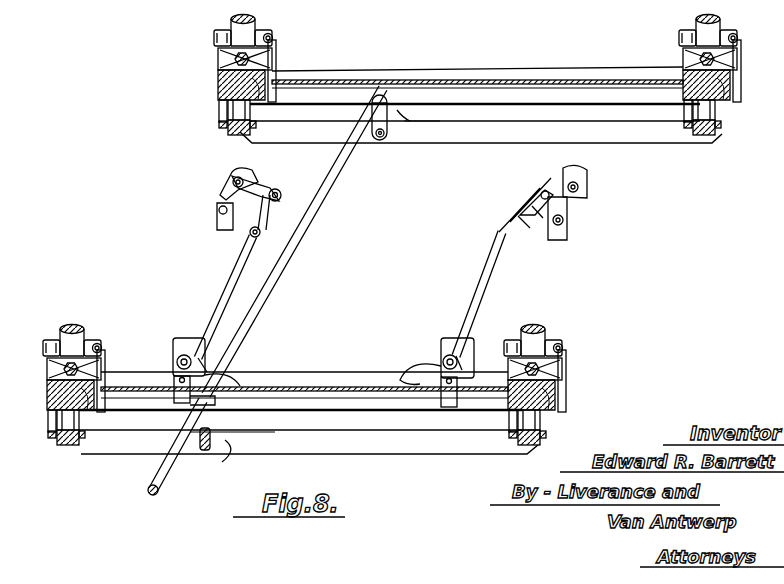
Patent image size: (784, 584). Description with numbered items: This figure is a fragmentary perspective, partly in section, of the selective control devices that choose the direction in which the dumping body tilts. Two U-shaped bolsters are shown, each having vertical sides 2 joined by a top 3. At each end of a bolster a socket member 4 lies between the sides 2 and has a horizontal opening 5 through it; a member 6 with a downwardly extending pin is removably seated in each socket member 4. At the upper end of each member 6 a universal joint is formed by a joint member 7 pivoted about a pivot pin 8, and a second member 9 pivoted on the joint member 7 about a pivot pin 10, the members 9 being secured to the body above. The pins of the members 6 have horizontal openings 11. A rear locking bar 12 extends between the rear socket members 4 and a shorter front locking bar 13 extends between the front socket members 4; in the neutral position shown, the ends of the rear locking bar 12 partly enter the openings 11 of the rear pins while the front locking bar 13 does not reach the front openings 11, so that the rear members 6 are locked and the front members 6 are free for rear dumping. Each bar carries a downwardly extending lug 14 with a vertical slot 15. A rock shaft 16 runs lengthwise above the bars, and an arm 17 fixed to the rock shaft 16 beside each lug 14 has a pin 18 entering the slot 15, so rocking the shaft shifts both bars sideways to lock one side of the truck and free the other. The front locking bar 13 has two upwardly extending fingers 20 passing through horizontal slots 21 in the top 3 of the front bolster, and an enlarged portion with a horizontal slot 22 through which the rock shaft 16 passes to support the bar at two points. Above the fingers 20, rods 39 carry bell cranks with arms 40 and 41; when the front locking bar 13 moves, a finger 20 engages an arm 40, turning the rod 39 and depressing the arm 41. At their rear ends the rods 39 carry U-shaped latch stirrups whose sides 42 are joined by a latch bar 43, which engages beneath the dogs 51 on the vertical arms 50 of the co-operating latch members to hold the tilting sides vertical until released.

The sides 2 is at (470, 135).
The top 3 is at (497, 72).
The socket member 4 is at (278, 84).
The horizontal opening 5 is at (225, 115).
The members 6 is at (225, 90).
The joint member 7 is at (275, 56).
The pivot pin 8 is at (228, 64).
The universal joint member 9 is at (247, 30).
The pivot pin 10 is at (273, 40).
The openings 11 is at (232, 132).
The rear locking bar 12 is at (427, 123).
The front locking bar 13 is at (280, 423).
The lug 14 is at (400, 110).
The vertical slot 15 is at (213, 430).
The rock shaft 16 is at (272, 293).
The arm 17 is at (372, 100).
The pin 18 is at (383, 130).
The fingers 20 is at (180, 387).
The horizontal slots 21 is at (250, 385).
The horizontal slot 22 is at (192, 405).
The rods 39 is at (218, 290).
The arm 40 is at (173, 373).
The arm 41 is at (212, 368).
The sides 42 is at (265, 185).
The latch bar 43 is at (258, 217).
The vertical arms 50 is at (218, 225).
The dogs 51 is at (225, 190).